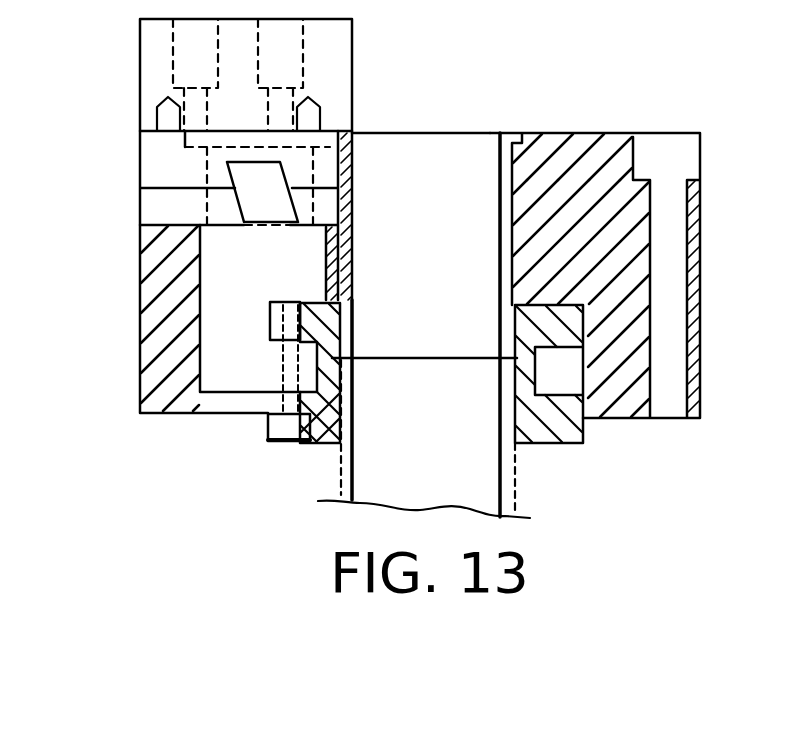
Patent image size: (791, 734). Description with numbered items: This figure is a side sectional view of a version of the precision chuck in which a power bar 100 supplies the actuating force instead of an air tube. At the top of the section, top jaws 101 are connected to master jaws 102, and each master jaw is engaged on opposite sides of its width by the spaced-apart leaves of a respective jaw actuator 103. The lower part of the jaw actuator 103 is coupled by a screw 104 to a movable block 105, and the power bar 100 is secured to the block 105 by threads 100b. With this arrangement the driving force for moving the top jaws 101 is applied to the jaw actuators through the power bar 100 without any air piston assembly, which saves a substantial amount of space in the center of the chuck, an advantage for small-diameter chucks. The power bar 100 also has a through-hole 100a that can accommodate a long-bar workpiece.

The power bar 100 is at (513, 503).
The through-hole 100a is at (497, 452).
The threads 100b is at (325, 443).
The top jaws 101 is at (148, 60).
The master jaws 102 is at (150, 150).
The jaw actuator 103 is at (218, 368).
The screw 104 is at (290, 442).
The movable block 105 is at (578, 422).